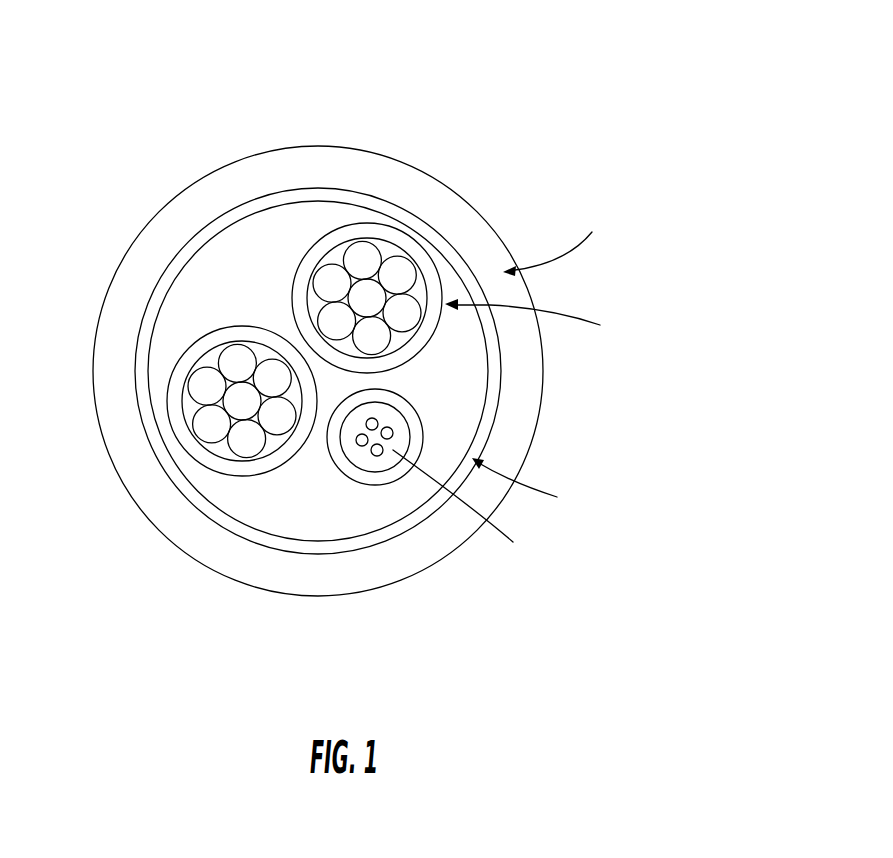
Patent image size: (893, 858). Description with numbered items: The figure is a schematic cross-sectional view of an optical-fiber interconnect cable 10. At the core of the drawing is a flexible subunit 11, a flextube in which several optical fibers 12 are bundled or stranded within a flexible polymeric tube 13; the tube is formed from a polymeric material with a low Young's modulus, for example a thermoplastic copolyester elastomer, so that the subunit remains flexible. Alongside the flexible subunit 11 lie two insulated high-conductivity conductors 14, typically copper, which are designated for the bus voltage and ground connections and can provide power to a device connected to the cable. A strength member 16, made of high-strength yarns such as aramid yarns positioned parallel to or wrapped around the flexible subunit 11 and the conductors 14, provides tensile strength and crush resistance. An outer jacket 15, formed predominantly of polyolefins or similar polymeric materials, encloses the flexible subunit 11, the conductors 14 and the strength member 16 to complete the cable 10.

The optical-fiber interconnect cable 10 is at (312, 92).
The flexible subunit 11 is at (428, 397).
The optical fibers 12 is at (378, 452).
The flexible polymeric tube 13 is at (370, 477).
The insulated high-conductivity conductors 14 is at (360, 302).
The outer jacket 15 is at (438, 200).
The strength member 16 is at (353, 200).